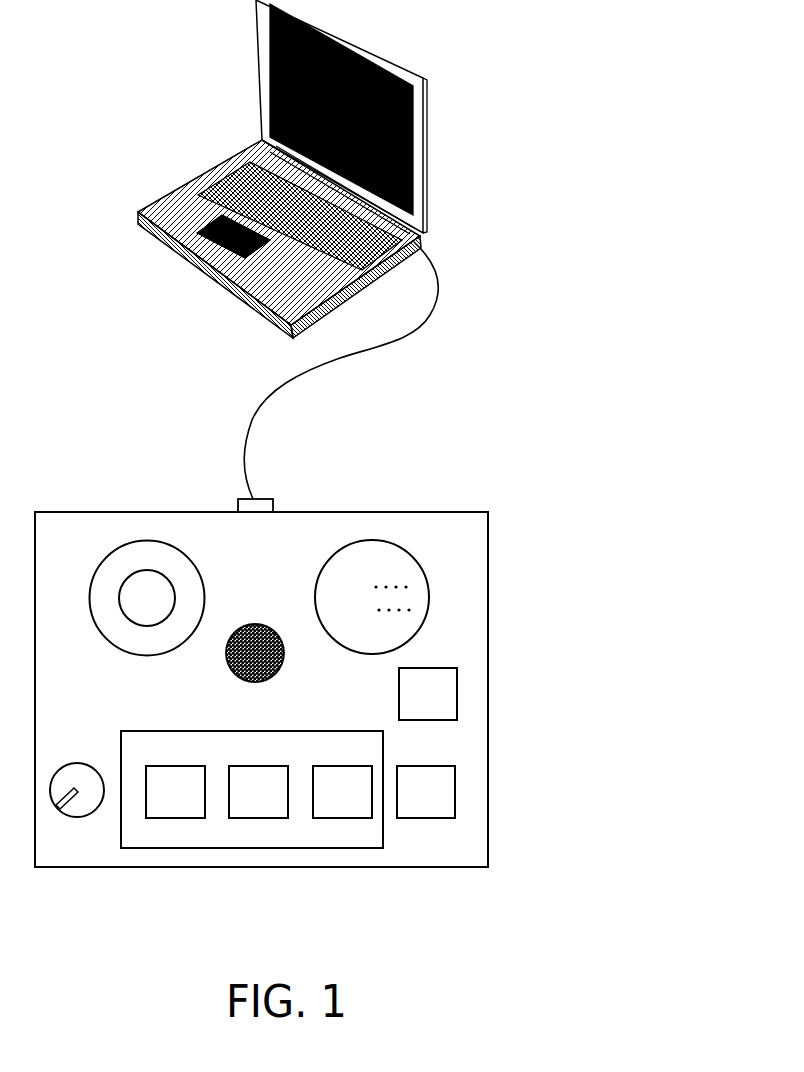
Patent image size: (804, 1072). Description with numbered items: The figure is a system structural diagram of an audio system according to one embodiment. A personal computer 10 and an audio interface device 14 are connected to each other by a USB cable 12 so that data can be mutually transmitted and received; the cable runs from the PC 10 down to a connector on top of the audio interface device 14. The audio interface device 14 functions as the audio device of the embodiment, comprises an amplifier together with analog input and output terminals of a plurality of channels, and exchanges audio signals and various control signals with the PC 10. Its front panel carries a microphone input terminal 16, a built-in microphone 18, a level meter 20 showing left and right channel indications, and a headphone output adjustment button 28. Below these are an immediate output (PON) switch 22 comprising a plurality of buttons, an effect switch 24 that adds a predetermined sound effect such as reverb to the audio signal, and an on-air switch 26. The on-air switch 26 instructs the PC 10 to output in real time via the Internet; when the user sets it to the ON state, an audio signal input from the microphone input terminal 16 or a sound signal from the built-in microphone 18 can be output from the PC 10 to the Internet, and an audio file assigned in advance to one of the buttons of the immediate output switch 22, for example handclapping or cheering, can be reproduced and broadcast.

The personal computer 10 is at (424, 182).
The USB cable 12 is at (423, 325).
The audio interface device 14 is at (488, 668).
The microphone input terminal 16 is at (195, 562).
The built-in microphone 18 is at (262, 625).
The level meter 20 is at (413, 555).
The immediate output (PON) switch 22 is at (297, 731).
The effect switch 24 is at (420, 818).
The on-air switch 26 is at (429, 667).
The headphone output adjustment button 28 is at (70, 767).